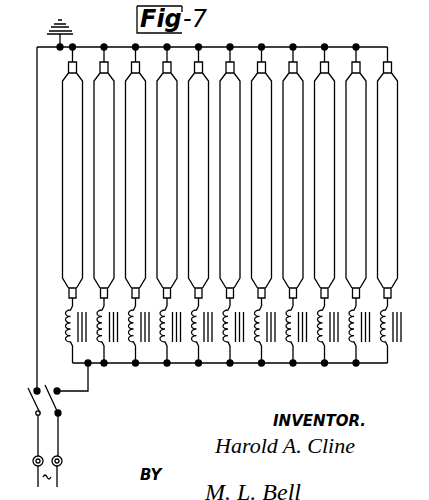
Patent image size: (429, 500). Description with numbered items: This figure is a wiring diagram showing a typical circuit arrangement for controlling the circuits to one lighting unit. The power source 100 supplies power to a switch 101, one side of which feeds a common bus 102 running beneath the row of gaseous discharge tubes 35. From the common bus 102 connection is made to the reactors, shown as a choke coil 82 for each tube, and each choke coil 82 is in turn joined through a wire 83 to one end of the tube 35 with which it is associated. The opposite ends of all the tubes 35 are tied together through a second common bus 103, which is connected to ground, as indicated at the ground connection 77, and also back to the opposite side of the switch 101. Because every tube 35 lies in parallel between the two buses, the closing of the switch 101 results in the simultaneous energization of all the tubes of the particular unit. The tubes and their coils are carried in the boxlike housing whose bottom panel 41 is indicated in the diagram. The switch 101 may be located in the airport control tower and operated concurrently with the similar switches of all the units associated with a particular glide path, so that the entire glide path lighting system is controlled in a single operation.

The ground connection 77 is at (63, 43).
The common bus 103 is at (238, 47).
The gaseous discharge tube 35 is at (393, 37).
The wire 83 is at (69, 299).
The choke coil 82 is at (67, 327).
The bottom panel 41 is at (15, 343).
The common bus 102 is at (118, 365).
The switch 101 is at (56, 404).
The power source 100 is at (60, 478).